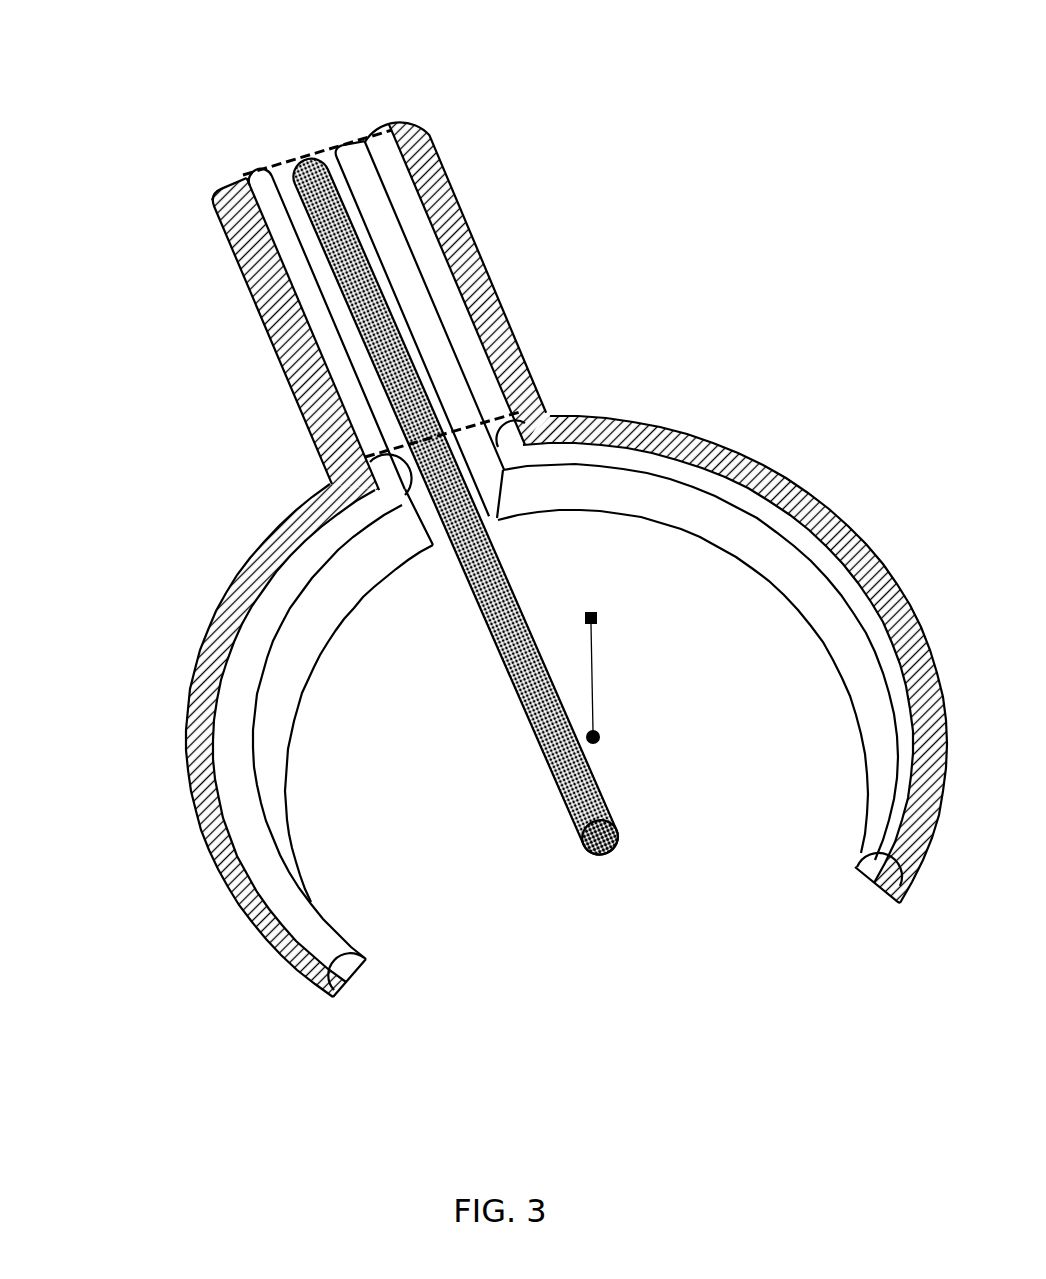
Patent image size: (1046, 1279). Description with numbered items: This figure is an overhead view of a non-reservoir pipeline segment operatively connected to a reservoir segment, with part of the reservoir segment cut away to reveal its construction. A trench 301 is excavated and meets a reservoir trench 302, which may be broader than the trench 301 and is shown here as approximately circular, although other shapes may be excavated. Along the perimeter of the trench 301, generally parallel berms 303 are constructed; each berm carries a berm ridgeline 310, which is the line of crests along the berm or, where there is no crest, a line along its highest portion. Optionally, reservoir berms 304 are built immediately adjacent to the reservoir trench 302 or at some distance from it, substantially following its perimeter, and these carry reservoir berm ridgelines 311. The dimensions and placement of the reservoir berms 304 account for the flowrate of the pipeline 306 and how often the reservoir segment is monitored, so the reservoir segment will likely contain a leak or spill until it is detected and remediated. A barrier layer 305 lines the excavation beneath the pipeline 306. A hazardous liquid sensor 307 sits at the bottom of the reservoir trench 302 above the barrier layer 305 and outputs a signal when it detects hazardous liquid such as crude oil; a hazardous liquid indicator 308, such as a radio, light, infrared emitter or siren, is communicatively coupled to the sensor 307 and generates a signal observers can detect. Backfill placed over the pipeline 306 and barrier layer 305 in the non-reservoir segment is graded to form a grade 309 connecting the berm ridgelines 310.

The trench 301 is at (262, 168).
The reservoir trench 302 is at (210, 680).
The berms 303 is at (480, 248).
The reservoir berms 304 is at (716, 450).
The barrier layer 305 is at (393, 183).
The pipeline 306 is at (590, 836).
The hazardous liquid sensor 307 is at (597, 743).
The hazardous liquid indicator 308 is at (597, 621).
The grade 309 is at (243, 175).
The berm ridgelines 310 is at (396, 180).
The reservoir berm ridgelines 311 is at (892, 643).